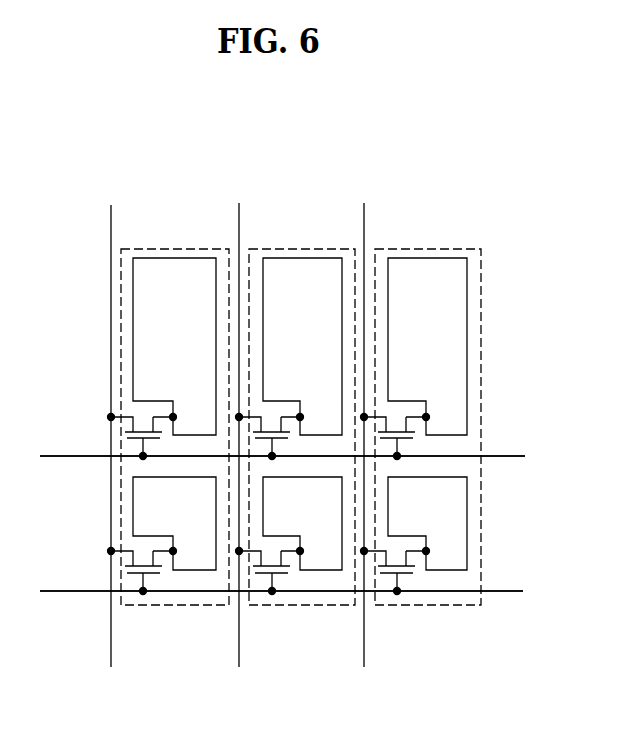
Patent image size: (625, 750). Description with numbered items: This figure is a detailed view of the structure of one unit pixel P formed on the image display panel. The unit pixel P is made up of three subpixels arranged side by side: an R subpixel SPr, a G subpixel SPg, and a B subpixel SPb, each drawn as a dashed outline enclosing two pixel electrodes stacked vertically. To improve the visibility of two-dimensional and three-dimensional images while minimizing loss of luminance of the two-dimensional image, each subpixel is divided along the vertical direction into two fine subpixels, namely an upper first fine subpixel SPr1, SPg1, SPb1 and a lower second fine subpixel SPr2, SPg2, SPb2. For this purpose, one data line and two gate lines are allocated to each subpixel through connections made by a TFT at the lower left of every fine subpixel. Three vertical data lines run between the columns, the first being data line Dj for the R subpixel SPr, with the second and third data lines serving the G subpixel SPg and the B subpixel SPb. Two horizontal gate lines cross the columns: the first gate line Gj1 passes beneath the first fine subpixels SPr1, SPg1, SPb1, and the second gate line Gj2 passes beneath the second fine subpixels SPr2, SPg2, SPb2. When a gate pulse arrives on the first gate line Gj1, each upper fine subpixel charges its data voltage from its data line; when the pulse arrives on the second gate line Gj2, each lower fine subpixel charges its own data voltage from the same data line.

The unit pixel P is at (54, 157).
The first data line Dj is at (109, 422).
The first gate line Gj1 is at (266, 456).
The second gate line Gj2 is at (265, 591).
The element TFT is at (124, 431).
The R subpixel SPr is at (177, 606).
The G subpixel SPg is at (303, 606).
The B subpixel SPb is at (430, 606).
The first fine subpixel SPr1 is at (197, 350).
The first fine subpixel SPg1 is at (325, 350).
The first fine subpixel SPb1 is at (450, 350).
The second fine subpixel SPr2 is at (198, 517).
The second fine subpixel SPg2 is at (325, 517).
The second fine subpixel SPb2 is at (450, 517).